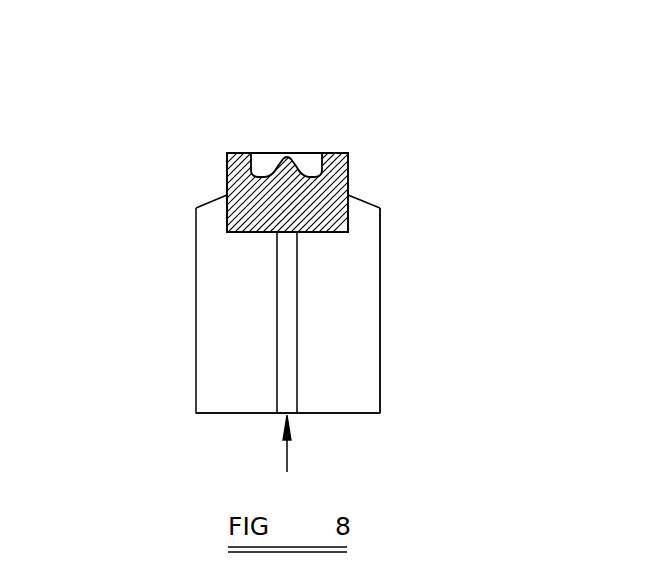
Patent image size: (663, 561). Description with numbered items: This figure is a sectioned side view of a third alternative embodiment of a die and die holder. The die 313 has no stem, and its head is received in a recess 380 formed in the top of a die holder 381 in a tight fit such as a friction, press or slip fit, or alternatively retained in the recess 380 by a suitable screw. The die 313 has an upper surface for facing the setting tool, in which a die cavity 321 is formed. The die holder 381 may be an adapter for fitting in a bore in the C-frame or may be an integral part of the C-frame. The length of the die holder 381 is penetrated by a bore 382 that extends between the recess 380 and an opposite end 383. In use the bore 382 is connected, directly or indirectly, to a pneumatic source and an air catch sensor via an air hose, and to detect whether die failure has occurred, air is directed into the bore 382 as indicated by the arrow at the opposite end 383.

The die 313 is at (345, 172).
The die cavity 321 is at (262, 163).
The recess 380 is at (226, 208).
The die holder 381 is at (353, 295).
The bore 382 is at (288, 332).
The opposite end 383 is at (332, 413).